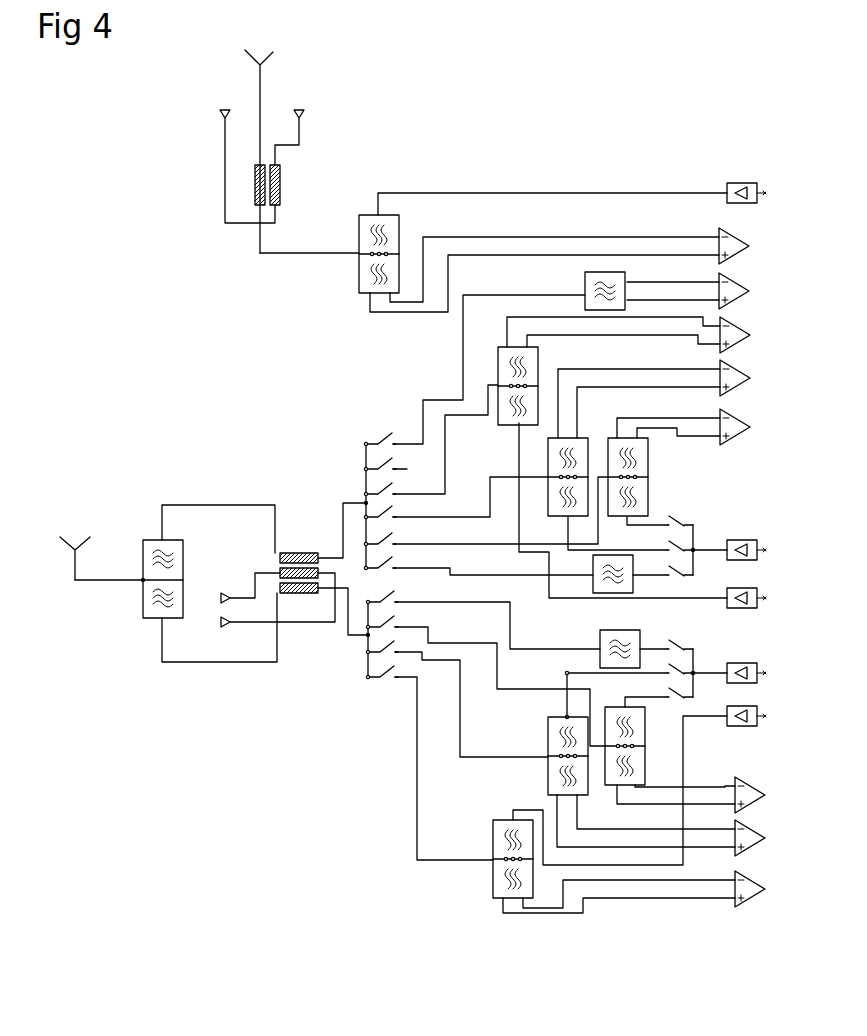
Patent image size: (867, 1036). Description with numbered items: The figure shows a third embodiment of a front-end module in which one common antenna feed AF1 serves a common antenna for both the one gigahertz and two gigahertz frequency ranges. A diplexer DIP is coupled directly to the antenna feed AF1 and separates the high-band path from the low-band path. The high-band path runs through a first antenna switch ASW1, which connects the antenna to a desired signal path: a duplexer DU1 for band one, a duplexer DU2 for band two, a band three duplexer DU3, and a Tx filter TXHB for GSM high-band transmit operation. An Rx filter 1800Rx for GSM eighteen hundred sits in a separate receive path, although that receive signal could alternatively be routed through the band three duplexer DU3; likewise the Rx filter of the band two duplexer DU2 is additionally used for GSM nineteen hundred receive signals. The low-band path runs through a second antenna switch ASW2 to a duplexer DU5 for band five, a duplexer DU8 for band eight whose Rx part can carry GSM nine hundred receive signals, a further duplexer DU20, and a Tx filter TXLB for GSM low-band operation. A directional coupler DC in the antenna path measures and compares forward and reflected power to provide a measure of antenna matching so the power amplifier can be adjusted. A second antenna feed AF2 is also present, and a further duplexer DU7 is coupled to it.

The directional coupler DC is at (300, 108).
The Band 7 duplexer DU7 is at (364, 214).
The Rx filter 1800Rx is at (585, 295).
The second antenna feed AF2 is at (268, 258).
The band 3 duplexer DU3 is at (498, 358).
The first antenna switch ASW1 is at (358, 458).
The band 2 duplexer DU2 is at (548, 463).
The diplexer DIP is at (140, 543).
The antenna feed AF1 is at (77, 580).
The band 1 duplexer DU1 is at (647, 498).
The second antenna switch ASW2 is at (363, 647).
The Tx filter for GSM high-band TXHB is at (603, 590).
The Tx filter for GSM low-band TXLB is at (603, 665).
The band 5 duplexer DU5 is at (553, 768).
The Band XX duplexer DU20 is at (497, 883).
The band 8 duplexer DU8 is at (627, 782).